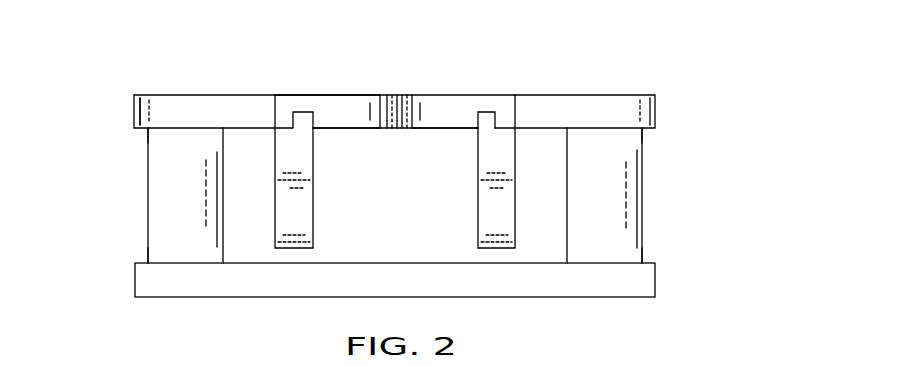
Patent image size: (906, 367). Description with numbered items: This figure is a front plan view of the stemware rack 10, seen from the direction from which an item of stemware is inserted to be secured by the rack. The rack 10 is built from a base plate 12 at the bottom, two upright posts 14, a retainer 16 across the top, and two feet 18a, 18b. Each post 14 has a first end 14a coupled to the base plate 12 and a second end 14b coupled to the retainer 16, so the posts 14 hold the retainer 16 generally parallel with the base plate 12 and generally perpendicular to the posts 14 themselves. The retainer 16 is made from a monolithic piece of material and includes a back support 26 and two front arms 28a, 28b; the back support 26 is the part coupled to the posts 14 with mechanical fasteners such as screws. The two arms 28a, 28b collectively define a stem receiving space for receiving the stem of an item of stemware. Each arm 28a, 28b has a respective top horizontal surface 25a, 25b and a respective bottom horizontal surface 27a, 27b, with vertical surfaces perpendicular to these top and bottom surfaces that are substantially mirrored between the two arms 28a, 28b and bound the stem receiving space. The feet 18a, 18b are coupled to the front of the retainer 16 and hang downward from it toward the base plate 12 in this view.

The stemware rack 10 is at (448, 54).
The base plate 12 is at (643, 285).
The post 14 is at (148, 182).
The first end 14a is at (165, 252).
The second end 14b is at (165, 142).
The retainer 16 is at (607, 100).
The foot 18a is at (295, 213).
The foot 18b is at (495, 212).
The top horizontal surface 25a is at (328, 95).
The top horizontal surface 25b is at (435, 95).
The back support 26 is at (170, 107).
The bottom horizontal surface 27a is at (350, 128).
The bottom horizontal surface 27b is at (440, 128).
The front arm 28a is at (295, 95).
The front arm 28b is at (462, 102).